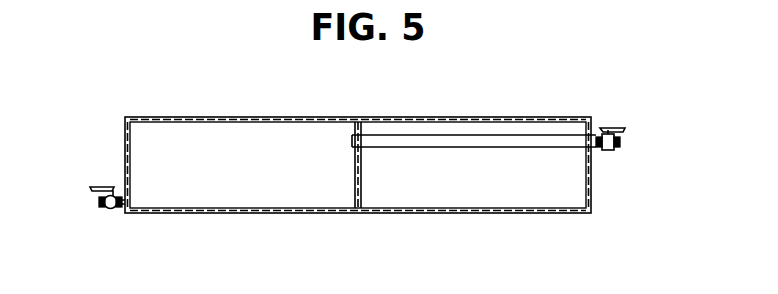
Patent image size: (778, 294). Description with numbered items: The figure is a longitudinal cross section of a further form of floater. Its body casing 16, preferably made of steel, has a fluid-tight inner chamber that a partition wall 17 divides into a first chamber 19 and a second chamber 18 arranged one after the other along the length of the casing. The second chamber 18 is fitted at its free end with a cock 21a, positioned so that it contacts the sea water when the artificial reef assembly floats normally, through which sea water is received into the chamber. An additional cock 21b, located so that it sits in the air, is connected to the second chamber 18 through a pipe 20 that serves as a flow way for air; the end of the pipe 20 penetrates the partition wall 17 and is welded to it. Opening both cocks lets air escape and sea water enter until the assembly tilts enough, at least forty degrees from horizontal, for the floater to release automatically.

The body casing 16 is at (263, 117).
The partition wall 17 is at (355, 193).
The second chamber 18 is at (264, 192).
The first chamber 19 is at (477, 200).
The pipe 20 is at (493, 135).
The cock 21a is at (107, 209).
The cock 21b is at (612, 128).